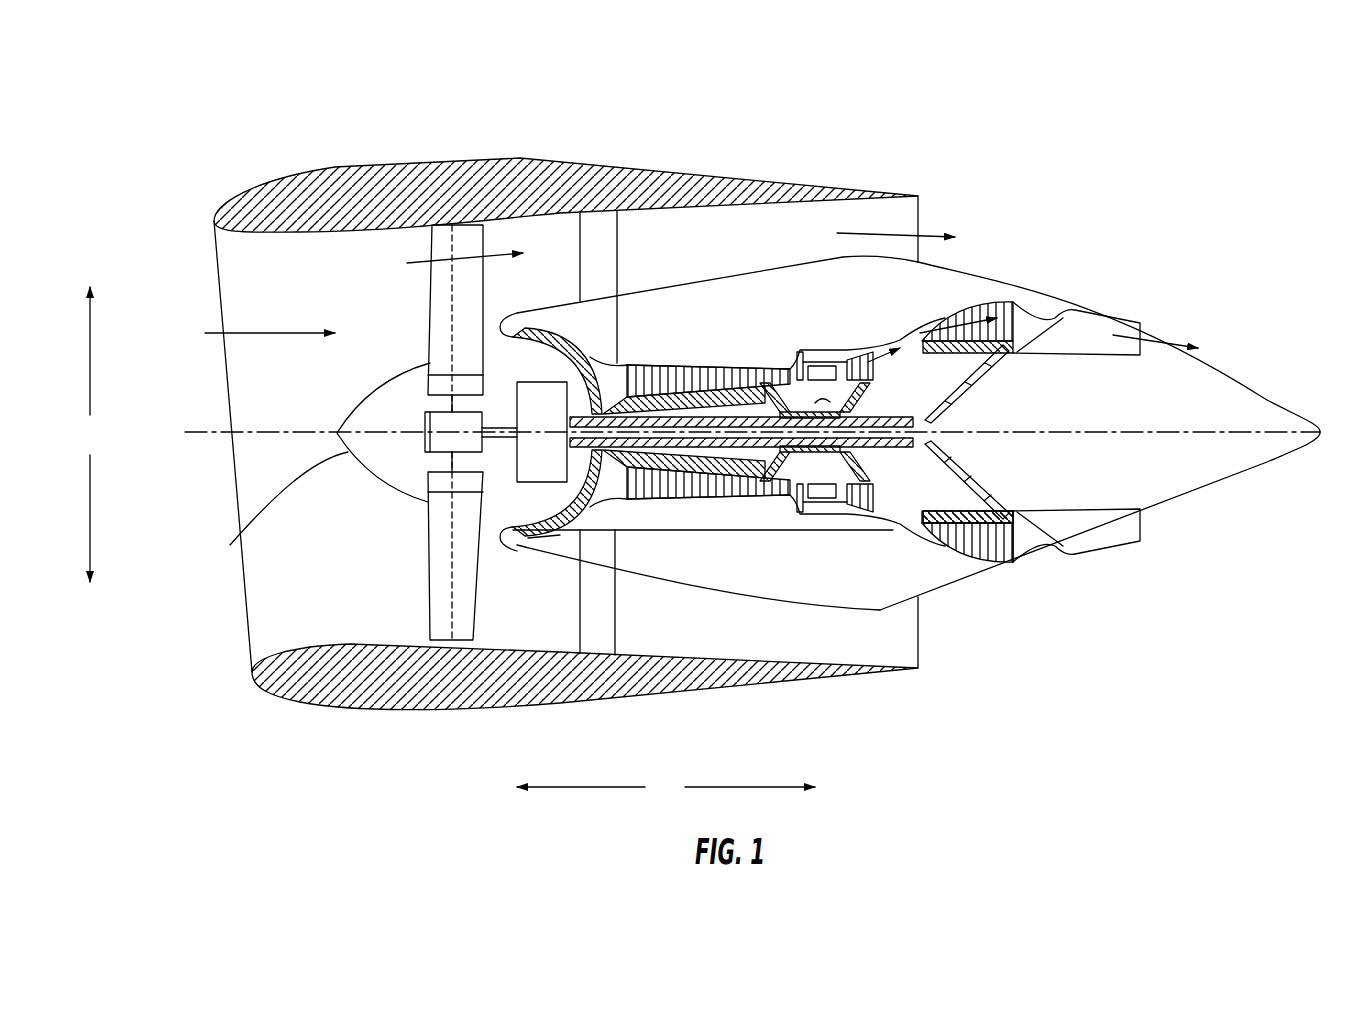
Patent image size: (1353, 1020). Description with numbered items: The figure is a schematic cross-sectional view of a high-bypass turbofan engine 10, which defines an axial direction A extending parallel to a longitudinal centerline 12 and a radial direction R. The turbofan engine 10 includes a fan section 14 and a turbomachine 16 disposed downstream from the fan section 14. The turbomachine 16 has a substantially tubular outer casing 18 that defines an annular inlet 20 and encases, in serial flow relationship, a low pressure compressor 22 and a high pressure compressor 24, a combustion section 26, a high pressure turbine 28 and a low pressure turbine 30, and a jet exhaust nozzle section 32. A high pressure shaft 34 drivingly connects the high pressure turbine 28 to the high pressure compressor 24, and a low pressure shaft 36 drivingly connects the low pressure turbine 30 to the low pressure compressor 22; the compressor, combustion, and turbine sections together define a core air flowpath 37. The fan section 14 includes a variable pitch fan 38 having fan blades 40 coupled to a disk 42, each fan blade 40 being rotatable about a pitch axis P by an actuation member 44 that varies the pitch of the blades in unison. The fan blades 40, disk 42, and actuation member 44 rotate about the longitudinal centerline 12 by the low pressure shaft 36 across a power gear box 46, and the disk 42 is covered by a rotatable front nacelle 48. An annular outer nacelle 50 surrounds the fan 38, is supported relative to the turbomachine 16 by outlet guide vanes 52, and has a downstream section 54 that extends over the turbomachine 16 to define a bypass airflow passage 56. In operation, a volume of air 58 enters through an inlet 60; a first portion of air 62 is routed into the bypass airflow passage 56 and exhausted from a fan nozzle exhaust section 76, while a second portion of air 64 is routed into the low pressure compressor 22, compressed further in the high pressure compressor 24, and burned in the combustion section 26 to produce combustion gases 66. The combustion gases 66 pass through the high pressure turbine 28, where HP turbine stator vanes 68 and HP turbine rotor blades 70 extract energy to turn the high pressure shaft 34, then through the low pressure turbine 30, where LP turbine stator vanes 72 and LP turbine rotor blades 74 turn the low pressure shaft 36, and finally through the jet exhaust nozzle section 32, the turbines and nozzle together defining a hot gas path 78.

The turbofan engine 10 is at (1062, 178).
The longitudinal centerline 12 is at (1257, 432).
The fan section 14 is at (472, 128).
The turbomachine 16 is at (790, 320).
The outer casing 18 is at (777, 598).
The annular inlet 20 is at (528, 538).
The low pressure compressor 22 is at (567, 493).
The high pressure compressor 24 is at (645, 485).
The combustion section 26 is at (817, 503).
The high pressure turbine 28 is at (880, 506).
The low pressure turbine 30 is at (1000, 557).
The jet exhaust nozzle section 32 is at (1063, 543).
The high pressure shaft 34 is at (825, 402).
The low pressure shaft 36 is at (937, 393).
The core air flowpath 37 is at (610, 497).
The variable pitch fan 38 is at (392, 485).
The fan blades 40 is at (425, 582).
The disk 42 is at (428, 387).
The actuation member 44 is at (425, 413).
The power gear box 46 is at (556, 405).
The front nacelle 48 is at (273, 508).
The outer nacelle 50 is at (470, 706).
The outlet guide vanes 52 is at (618, 242).
The downstream section 54 is at (840, 187).
The bypass airflow passage 56 is at (715, 258).
The volume of air 58 is at (268, 330).
The inlet 60 is at (247, 650).
The first portion of air 62 is at (443, 253).
The second portion of air 64 is at (512, 322).
The combustion gases 66 is at (860, 355).
The HP turbine stator vanes 68 is at (832, 504).
The HP turbine rotor blades 70 is at (920, 467).
The LP turbine stator vanes 72 is at (927, 540).
The LP turbine rotor blades 74 is at (937, 547).
The fan nozzle exhaust section 76 is at (910, 222).
The hot gas path 78 is at (908, 336).
The pitch axis P is at (457, 240).
The radial direction R is at (90, 434).
The axial direction A is at (666, 787).